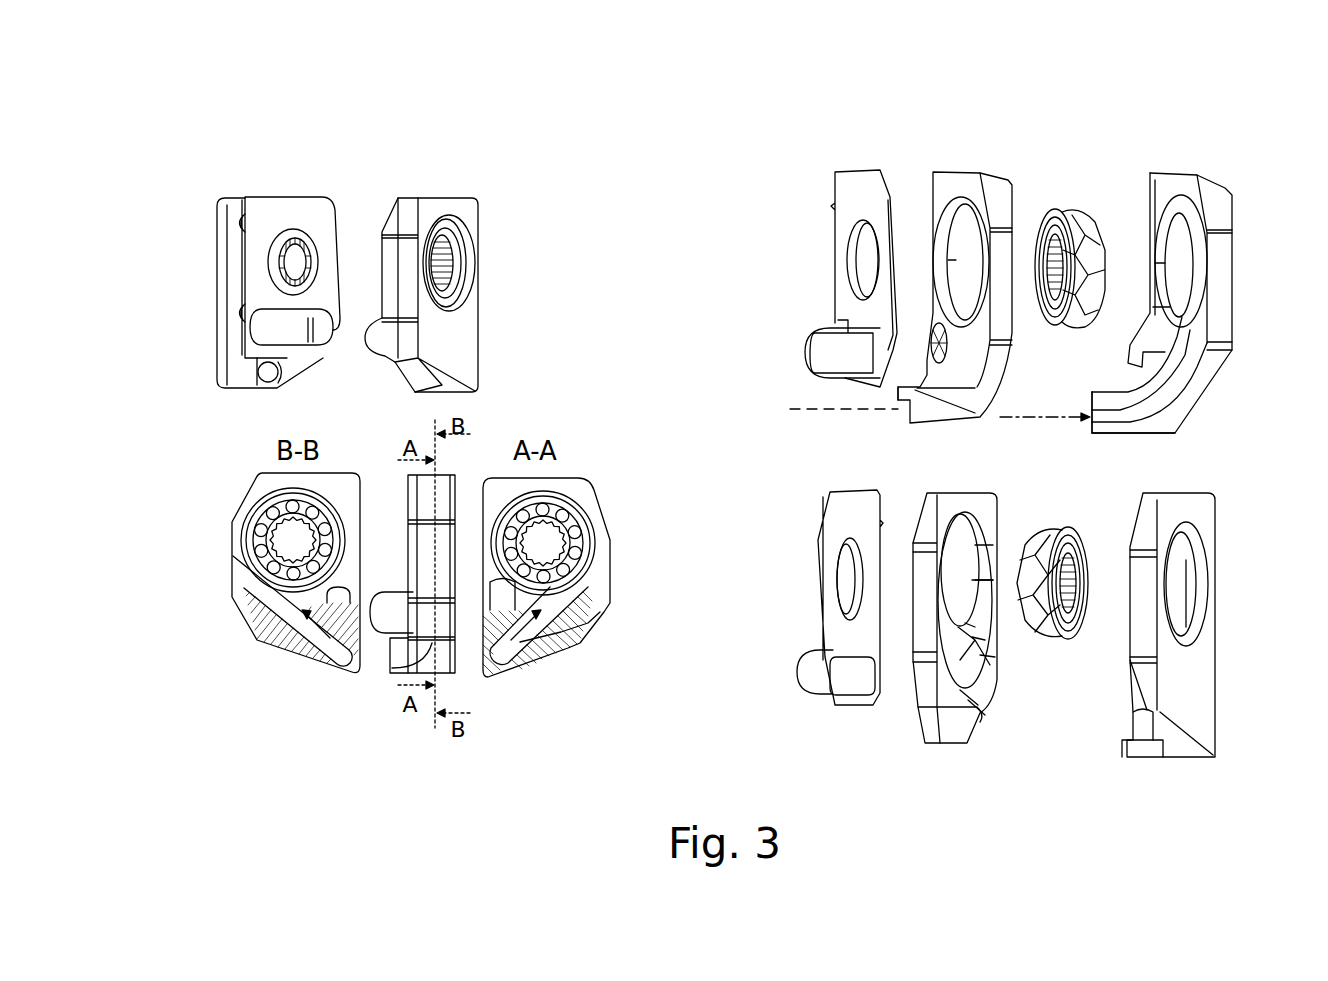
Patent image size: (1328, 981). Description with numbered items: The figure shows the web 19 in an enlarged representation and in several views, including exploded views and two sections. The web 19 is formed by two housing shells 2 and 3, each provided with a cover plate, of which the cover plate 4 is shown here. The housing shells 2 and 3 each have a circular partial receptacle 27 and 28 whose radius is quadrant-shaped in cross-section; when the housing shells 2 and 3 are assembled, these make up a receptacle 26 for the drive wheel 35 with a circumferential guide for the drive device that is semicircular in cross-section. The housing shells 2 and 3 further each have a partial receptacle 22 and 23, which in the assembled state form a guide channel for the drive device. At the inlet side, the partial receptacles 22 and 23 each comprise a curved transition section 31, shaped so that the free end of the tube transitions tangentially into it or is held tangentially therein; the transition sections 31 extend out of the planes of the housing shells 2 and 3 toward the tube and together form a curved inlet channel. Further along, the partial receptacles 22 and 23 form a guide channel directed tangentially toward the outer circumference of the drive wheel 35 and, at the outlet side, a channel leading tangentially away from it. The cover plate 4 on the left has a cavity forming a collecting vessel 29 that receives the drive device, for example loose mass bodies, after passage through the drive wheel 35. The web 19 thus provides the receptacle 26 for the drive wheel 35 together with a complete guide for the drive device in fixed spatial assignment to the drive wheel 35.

The housing shell 2 is at (242, 198).
The housing shell 3 is at (220, 198).
The cover plate 4 is at (290, 205).
The web 19 is at (1057, 151).
The partial receptacle 22 is at (273, 595).
The partial receptacle 23 is at (557, 640).
The receptacle 26 is at (982, 540).
The circular partial receptacle 27 is at (1183, 587).
The circular partial receptacle 28 is at (987, 580).
The collecting vessel 29 is at (340, 602).
The curved transition section 31 is at (904, 403).
The drive wheel 35 is at (290, 537).